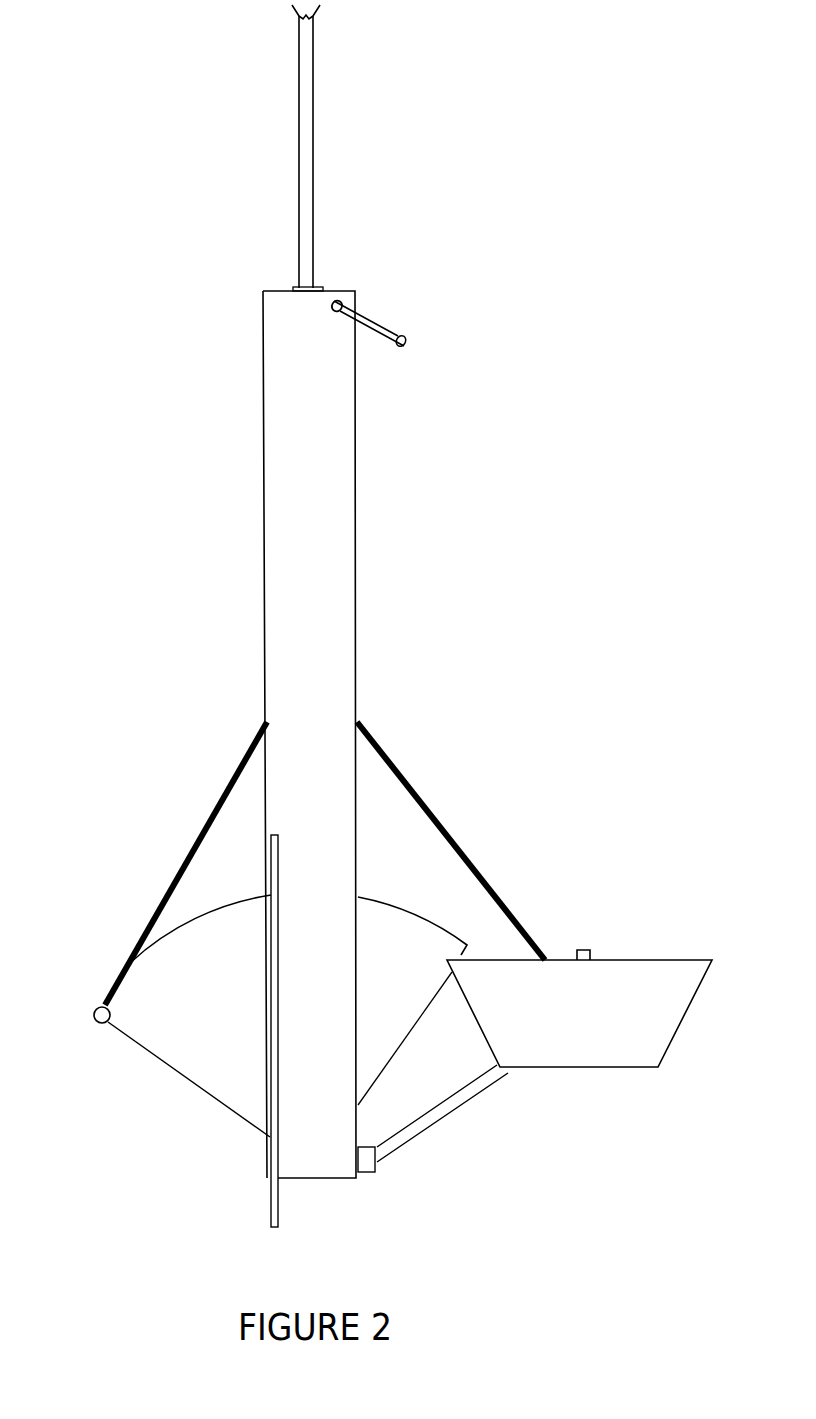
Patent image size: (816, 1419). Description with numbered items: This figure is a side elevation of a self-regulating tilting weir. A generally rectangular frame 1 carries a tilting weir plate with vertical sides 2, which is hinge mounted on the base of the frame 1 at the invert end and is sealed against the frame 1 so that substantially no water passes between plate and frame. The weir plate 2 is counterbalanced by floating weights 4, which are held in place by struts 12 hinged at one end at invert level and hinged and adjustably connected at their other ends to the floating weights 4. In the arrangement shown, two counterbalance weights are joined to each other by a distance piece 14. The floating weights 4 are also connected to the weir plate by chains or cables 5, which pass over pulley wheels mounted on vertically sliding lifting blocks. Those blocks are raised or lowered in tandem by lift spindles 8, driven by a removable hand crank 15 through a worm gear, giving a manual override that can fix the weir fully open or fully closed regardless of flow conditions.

The frame 1 is at (323, 525).
The weir plate 2 is at (198, 1015).
The floating weights 4 is at (620, 1052).
The chains or cables 5 is at (212, 810).
The lift spindles 8 is at (307, 104).
The struts 12 is at (443, 1110).
The distance piece 14 is at (590, 950).
The hand crank 15 is at (368, 318).